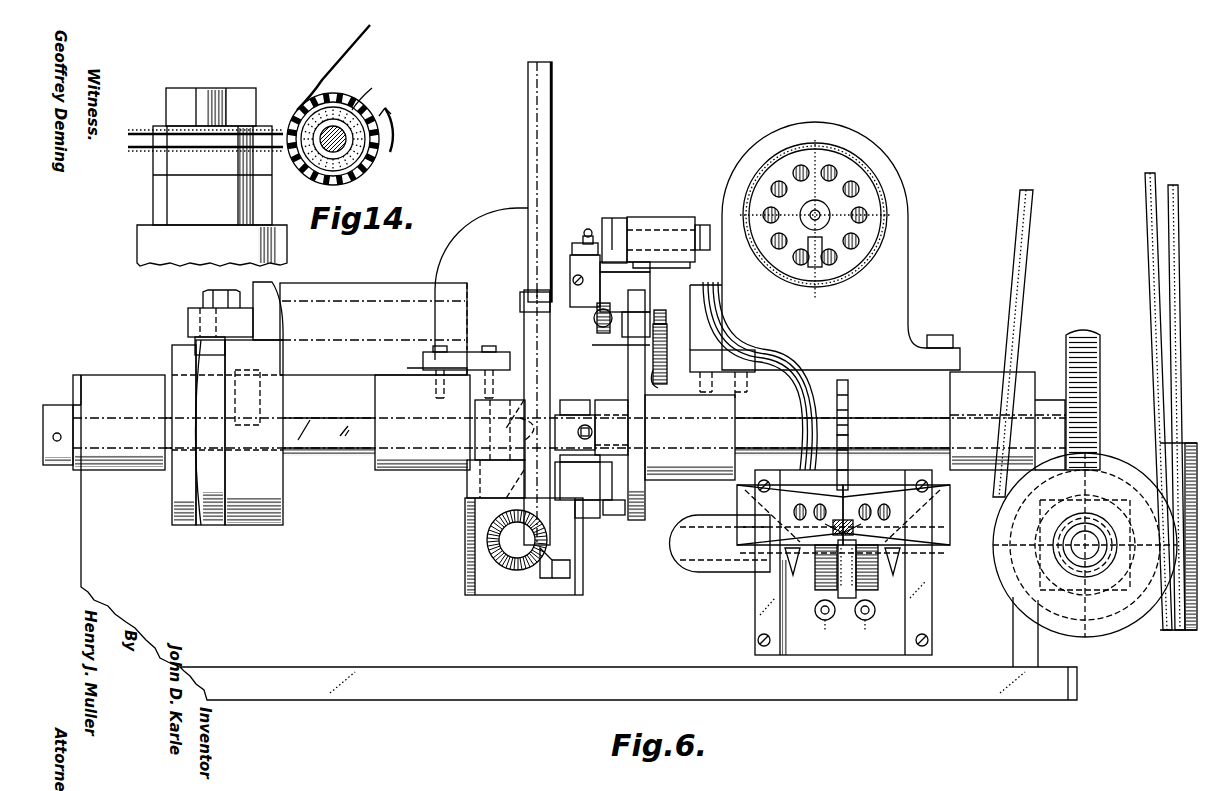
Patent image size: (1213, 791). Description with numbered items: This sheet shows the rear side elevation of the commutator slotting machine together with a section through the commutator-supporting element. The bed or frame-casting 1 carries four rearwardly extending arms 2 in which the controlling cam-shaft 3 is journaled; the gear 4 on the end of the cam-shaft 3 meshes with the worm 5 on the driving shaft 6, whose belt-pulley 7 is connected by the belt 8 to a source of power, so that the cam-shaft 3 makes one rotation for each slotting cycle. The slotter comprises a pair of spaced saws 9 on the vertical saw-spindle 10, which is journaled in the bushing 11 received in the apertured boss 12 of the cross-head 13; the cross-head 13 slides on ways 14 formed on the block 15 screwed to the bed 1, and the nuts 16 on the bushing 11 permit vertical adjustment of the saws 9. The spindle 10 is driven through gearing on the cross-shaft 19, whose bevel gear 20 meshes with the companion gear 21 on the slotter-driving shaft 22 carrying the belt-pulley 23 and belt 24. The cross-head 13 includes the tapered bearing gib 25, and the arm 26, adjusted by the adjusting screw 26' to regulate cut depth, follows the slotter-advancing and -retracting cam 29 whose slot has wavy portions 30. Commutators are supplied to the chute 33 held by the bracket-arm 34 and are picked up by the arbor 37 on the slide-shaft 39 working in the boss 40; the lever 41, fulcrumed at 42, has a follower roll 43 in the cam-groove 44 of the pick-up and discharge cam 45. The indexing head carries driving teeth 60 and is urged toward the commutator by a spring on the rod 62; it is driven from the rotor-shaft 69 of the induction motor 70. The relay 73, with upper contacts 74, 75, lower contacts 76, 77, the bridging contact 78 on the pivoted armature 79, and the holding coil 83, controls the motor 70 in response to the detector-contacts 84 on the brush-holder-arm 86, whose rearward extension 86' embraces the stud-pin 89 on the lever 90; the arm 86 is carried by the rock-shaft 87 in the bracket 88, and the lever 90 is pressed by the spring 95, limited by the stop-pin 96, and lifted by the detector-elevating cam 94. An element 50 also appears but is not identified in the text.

In FIG. 6, the bed or frame-casting 1 is at (508, 688).
In FIG. 6, the rearwardly extending arms 2 is at (136, 457).
In FIG. 6, the controlling cam-shaft 3 is at (332, 420).
In FIG. 6, the gear 4 is at (1080, 338).
In FIG. 6, the worm 5 is at (1093, 566).
In FIG. 6, the driving shaft 6 is at (1082, 552).
In FIG. 6, the belt-pulley 7 is at (1115, 625).
In FIG. 6, the belt 8 is at (1160, 312).
In FIG. 14, the circular slot-cutters or saws 9 is at (279, 138).
In FIG. 14, the vertical saw-spindle 10 is at (248, 196).
In FIG. 6, the vertical saw-spindle 10 is at (588, 326).
In FIG. 6, the bushing 11 is at (608, 360).
In FIG. 6, the vertically apertured boss 12 is at (598, 518).
In FIG. 6, the cross-head 13 is at (512, 484).
In FIG. 6, the ways 14 is at (512, 428).
In FIG. 6, the block 15 is at (478, 358).
In FIG. 6, the nuts 16 is at (578, 400).
In FIG. 6, the cross-shaft 19 is at (472, 540).
In FIG. 6, the bevel gear 20 is at (514, 574).
In FIG. 6, the companion gear 21 is at (548, 578).
In FIG. 6, the slotter-driving shaft 22 is at (702, 548).
In FIG. 6, the belt-pulley 23 is at (1172, 618).
In FIG. 6, the belt 24 is at (1176, 330).
In FIG. 6, the bearing gib 25 is at (610, 492).
In FIG. 6, the arm 26 is at (612, 426).
In FIG. 6, the adjusting screw 26' is at (590, 432).
In FIG. 6, the slotter-advancing and -retracting cam 29 is at (568, 466).
In FIG. 6, the wavy portions 30 is at (545, 328).
In FIG. 6, the vertical magazine or chute 33 is at (530, 158).
In FIG. 6, the bracket-arm 34 is at (466, 238).
In FIG. 14, the commutator pick-up and supporting arbor 37 is at (345, 147).
In FIG. 6, the slide-shaft 39 is at (375, 298).
In FIG. 6, the boss 40 is at (330, 295).
In FIG. 6, the lever 41 is at (190, 322).
In FIG. 6, the fulcrum 42 is at (224, 292).
In FIG. 6, the follower roll 43 is at (200, 348).
In FIG. 6, the cam-groove 44 is at (222, 406).
In FIG. 6, the commutator pick-up and discharge cam 45 is at (176, 506).
In FIG. 6, the plate top 50 is at (540, 312).
In FIG. 6, the commutator-engaging and -driving teeth 60 is at (850, 392).
In FIG. 6, the rod 62 is at (850, 478).
In FIG. 6, the rotor-shaft 69 is at (812, 218).
In FIG. 6, the induction motor 70 is at (872, 190).
In FIG. 6, the relay 73 is at (905, 612).
In FIG. 6, the upper contact 74 is at (815, 505).
In FIG. 6, the upper contact 75 is at (870, 505).
In FIG. 6, the lower contact 76 is at (790, 540).
In FIG. 6, the lower contact 77 is at (893, 540).
In FIG. 6, the bridging contact 78 is at (840, 522).
In FIG. 6, the pivoted armature 79 is at (875, 556).
In FIG. 6, the holding coil 83 is at (826, 578).
In FIG. 14, the detector-contacts or brushes 84 is at (337, 55).
In FIG. 6, the brush-holder-arm 86 is at (580, 267).
In FIG. 6, the rearward extension 86' is at (616, 222).
In FIG. 6, the rock-shaft 87 is at (675, 226).
In FIG. 6, the bracket 88 is at (652, 222).
In FIG. 6, the stud-pin 89 is at (630, 266).
In FIG. 6, the lever 90 is at (635, 294).
In FIG. 6, the detector-elevating cam 94 is at (645, 434).
In FIG. 6, the spring 95 is at (667, 358).
In FIG. 6, the adjustable stop-pin 96 is at (666, 330).